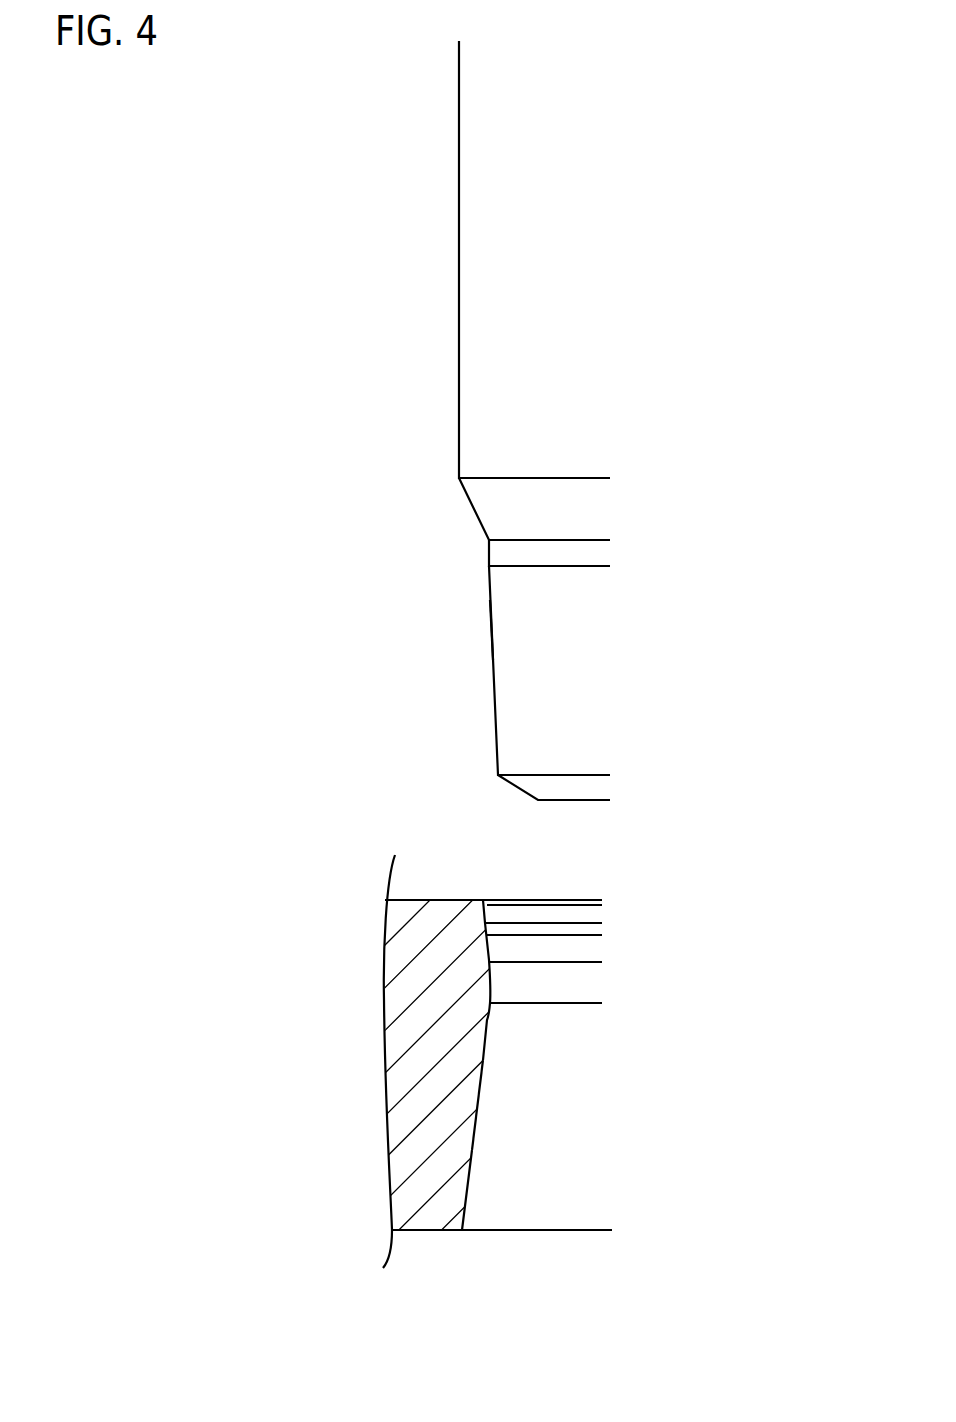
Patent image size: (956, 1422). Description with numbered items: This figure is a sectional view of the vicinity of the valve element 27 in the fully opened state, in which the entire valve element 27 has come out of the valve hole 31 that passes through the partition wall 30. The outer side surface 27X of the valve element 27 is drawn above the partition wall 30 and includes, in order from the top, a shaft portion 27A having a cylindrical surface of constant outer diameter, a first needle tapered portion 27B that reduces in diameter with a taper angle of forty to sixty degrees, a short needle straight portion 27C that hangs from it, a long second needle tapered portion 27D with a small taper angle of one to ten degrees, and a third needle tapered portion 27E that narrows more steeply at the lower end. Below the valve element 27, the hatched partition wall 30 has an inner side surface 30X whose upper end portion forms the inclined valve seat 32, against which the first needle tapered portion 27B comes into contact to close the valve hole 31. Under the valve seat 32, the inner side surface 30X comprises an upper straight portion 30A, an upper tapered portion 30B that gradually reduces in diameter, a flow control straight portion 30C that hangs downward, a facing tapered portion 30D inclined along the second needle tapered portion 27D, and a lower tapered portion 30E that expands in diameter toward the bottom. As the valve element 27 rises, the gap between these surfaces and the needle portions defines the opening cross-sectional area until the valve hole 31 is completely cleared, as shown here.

The valve element 27 is at (459, 257).
The shaft portion 27A is at (459, 348).
The first needle tapered portion 27B is at (475, 513).
The needle straight portion 27C is at (489, 555).
The outer side surface 27X is at (492, 638).
The second needle tapered portion 27D is at (492, 672).
The third needle tapered portion 27E is at (517, 788).
The partition wall 30 is at (412, 900).
The upper straight portion 30A is at (489, 905).
The upper tapered portion 30B is at (490, 921).
The flow control straight portion 30C is at (492, 941).
The facing tapered portion 30D is at (493, 975).
The inner side surface 30X is at (490, 1062).
The lower tapered portion 30E is at (468, 1185).
The valve hole 31 is at (486, 1095).
The valve seat 32 is at (495, 897).